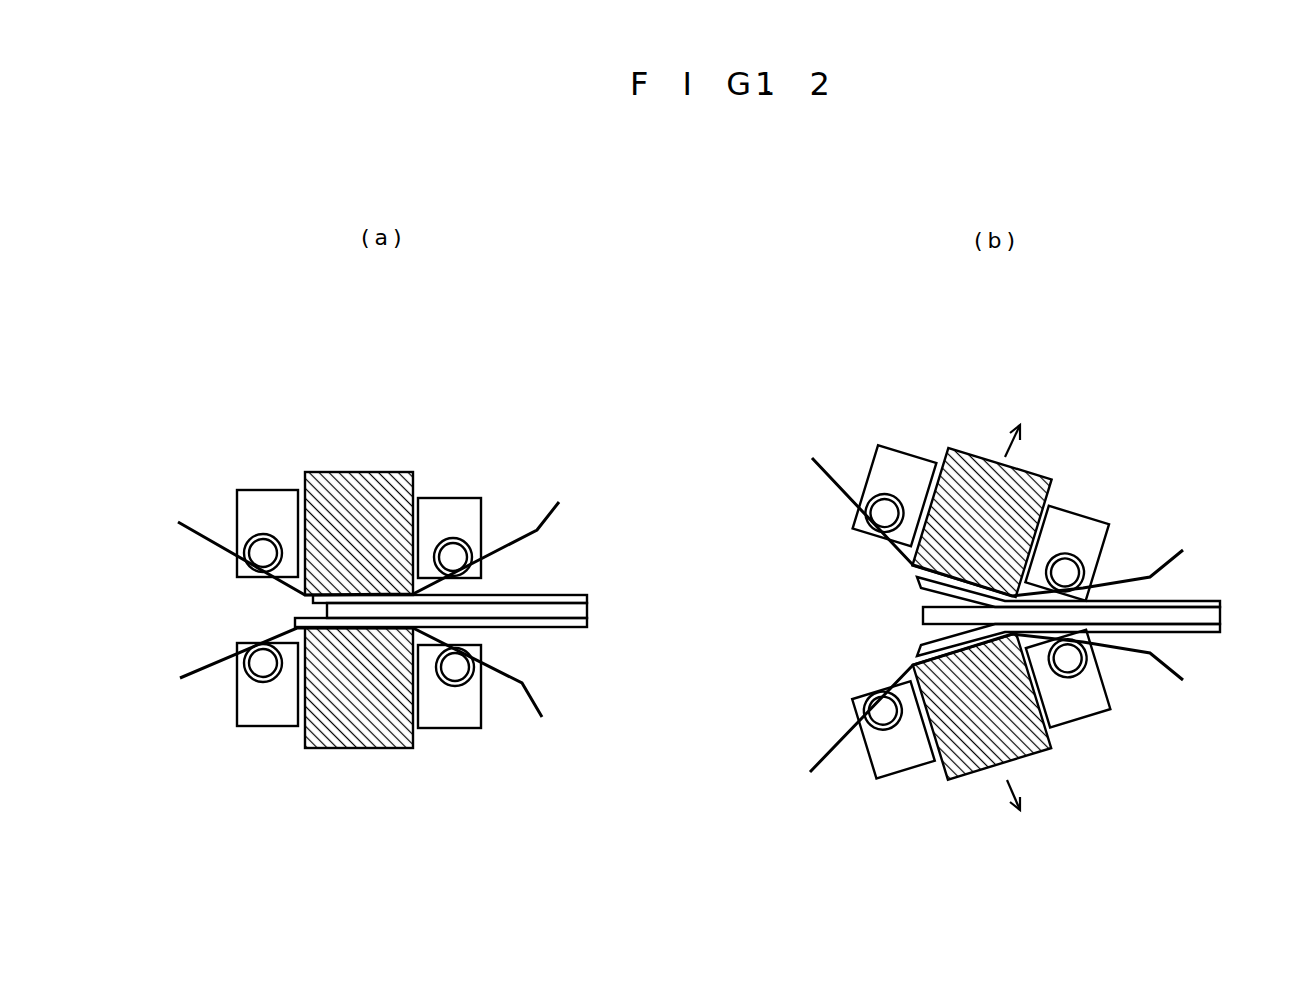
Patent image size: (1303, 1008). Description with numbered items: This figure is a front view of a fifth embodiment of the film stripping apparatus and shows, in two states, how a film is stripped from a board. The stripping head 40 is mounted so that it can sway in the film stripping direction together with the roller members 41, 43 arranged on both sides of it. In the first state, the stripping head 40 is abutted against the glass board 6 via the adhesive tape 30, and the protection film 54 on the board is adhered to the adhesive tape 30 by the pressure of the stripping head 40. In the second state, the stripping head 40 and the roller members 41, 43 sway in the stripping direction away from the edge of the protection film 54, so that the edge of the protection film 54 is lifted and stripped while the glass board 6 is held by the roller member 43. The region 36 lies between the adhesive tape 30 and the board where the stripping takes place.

The glass board 6 is at (587, 607).
The adhesive tape 30 is at (195, 530).
The nip portion 36 is at (228, 562).
The stripping head 40 is at (358, 472).
The roller member 41 is at (267, 490).
The roller member 43 is at (475, 495).
The protection film 54 is at (545, 593).